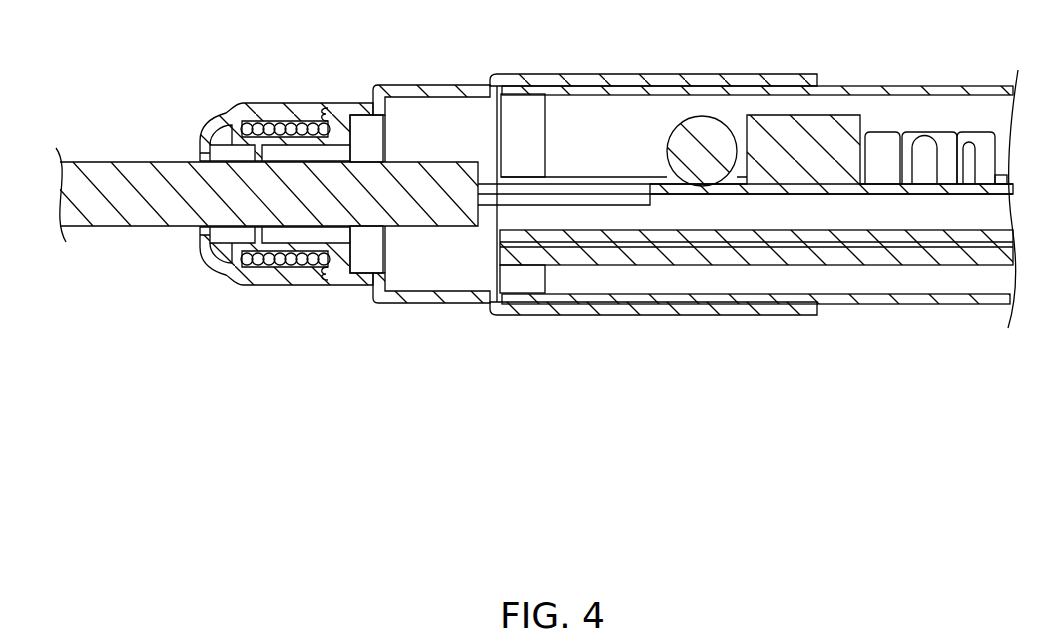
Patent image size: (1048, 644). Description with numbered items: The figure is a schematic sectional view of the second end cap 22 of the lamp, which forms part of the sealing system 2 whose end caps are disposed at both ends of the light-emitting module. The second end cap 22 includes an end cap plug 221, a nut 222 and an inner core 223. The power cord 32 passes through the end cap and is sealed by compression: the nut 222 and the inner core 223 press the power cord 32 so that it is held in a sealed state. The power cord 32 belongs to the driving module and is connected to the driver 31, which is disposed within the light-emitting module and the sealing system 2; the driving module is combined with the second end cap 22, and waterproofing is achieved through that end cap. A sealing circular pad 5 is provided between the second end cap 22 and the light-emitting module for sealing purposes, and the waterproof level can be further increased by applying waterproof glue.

The sealing system 2 is at (390, 85).
The second end cap 22 is at (466, 86).
The end cap plug 221 is at (367, 286).
The nut 222 is at (270, 113).
The inner core 223 is at (208, 262).
The driver 31 is at (800, 148).
The power cord 32 is at (137, 210).
The sealing circular pad 5 is at (533, 316).